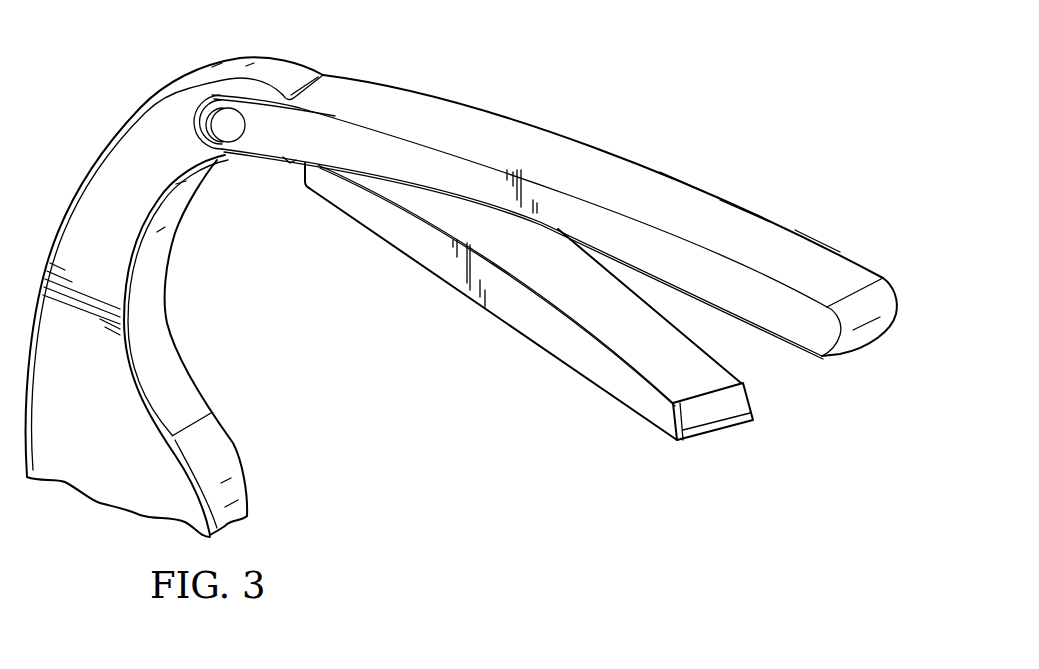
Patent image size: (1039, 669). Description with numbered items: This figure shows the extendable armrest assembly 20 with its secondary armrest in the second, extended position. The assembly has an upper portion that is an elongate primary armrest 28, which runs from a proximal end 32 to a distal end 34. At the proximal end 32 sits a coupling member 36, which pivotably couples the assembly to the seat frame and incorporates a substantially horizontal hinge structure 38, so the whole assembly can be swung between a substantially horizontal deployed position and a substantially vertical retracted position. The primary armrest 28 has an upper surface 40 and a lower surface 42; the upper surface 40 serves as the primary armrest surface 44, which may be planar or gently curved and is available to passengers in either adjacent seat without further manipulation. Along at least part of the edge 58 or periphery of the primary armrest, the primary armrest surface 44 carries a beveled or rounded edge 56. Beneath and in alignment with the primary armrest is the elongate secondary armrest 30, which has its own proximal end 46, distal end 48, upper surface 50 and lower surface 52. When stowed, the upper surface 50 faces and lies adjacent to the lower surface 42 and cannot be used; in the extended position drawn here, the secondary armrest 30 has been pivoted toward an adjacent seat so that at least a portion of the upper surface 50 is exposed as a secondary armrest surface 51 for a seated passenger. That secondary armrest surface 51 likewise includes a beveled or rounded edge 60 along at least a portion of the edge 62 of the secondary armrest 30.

The extendable armrest assembly 20 is at (658, 120).
The elongate primary armrest 28 is at (577, 257).
The elongate secondary armrest 30 is at (528, 344).
The proximal end 32 is at (341, 59).
The distal end 34 is at (882, 305).
The coupling member 36 is at (219, 155).
The hinge structure 38 is at (232, 133).
The upper surface 40 is at (744, 210).
The lower surface 42 is at (837, 375).
The primary armrest surface 44 is at (684, 183).
The proximal end 46 is at (299, 196).
The distal end 48 is at (714, 454).
The upper surface 50 is at (583, 310).
The secondary armrest surface 51 is at (532, 262).
The lower surface 52 is at (620, 412).
The beveled or rounded edge 56 is at (865, 338).
The edge 58 is at (818, 240).
The beveled or rounded edge 60 is at (717, 437).
The edge 62 is at (738, 367).